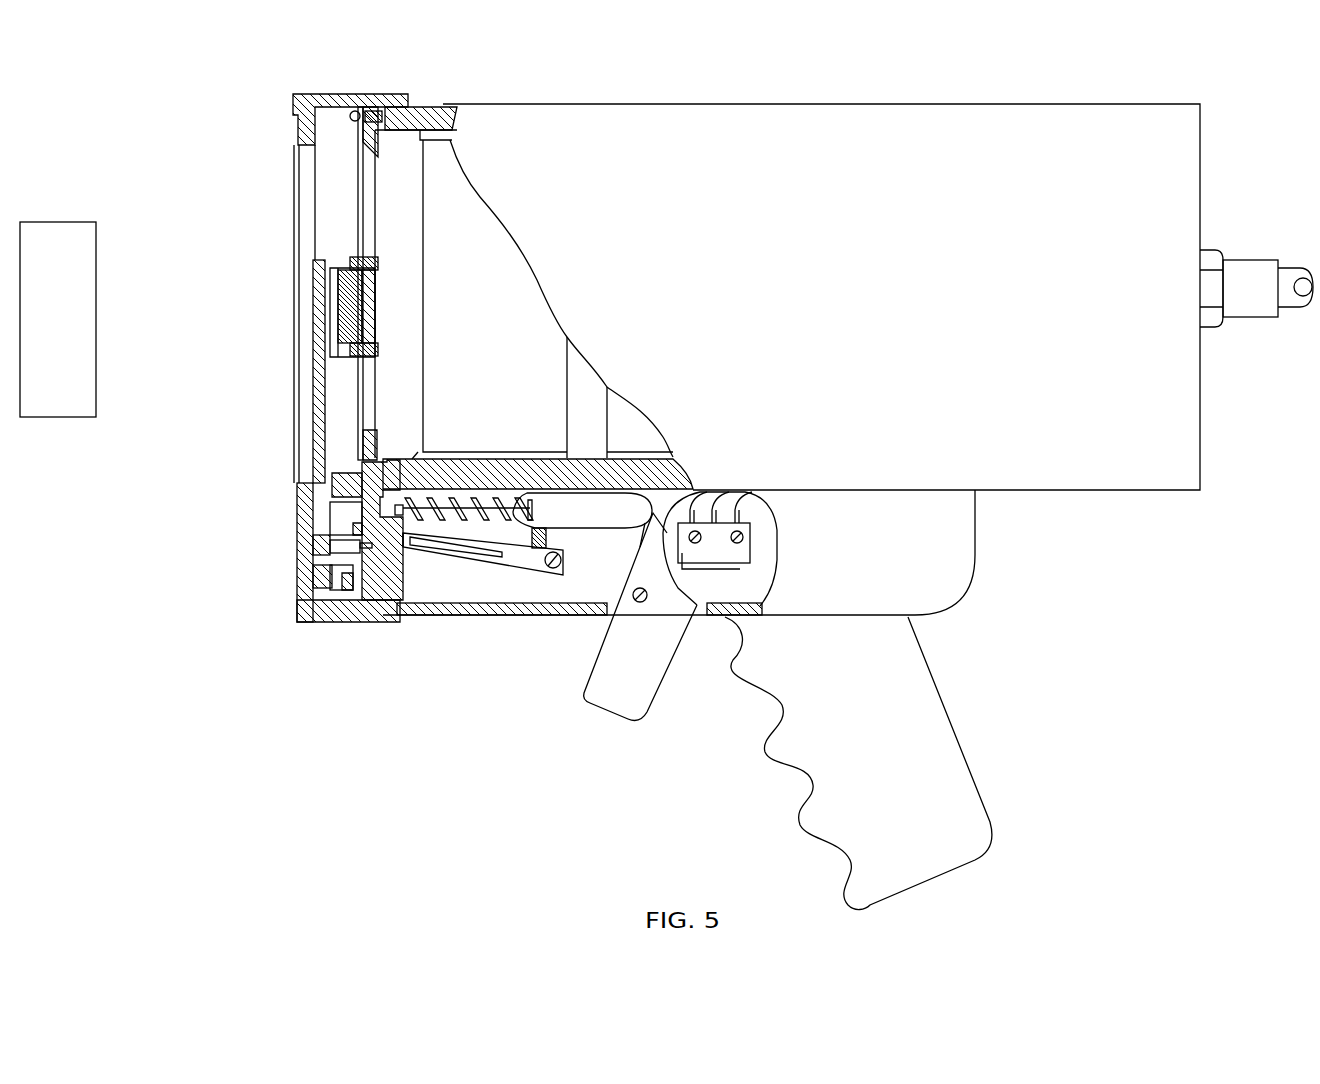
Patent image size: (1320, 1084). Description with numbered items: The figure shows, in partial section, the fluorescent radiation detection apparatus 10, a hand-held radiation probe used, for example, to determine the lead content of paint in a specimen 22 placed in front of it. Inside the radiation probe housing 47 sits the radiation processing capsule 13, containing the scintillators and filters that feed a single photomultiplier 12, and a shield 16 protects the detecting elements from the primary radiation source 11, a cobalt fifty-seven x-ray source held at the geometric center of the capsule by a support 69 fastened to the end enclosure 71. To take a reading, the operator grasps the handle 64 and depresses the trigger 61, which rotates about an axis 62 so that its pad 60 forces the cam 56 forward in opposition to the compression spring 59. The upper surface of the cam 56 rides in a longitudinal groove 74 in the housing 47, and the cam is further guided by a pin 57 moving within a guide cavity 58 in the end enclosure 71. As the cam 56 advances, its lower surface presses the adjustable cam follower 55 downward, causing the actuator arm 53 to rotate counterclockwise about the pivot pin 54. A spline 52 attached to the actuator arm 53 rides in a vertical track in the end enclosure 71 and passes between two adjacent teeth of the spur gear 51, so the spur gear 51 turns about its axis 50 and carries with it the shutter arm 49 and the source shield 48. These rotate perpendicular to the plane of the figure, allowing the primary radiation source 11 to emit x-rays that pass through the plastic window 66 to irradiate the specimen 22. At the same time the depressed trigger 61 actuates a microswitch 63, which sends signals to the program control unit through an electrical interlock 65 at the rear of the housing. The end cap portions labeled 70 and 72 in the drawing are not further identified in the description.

The fluorescent radiation detection apparatus 10 is at (1108, 492).
The primary radiation source 11 is at (330, 336).
The photomultiplier 12 is at (548, 298).
The radiation processing capsule 13 is at (410, 295).
The shield 16 is at (336, 252).
The specimen 22 is at (57, 418).
The radiation probe housing 47 is at (444, 104).
The source shield 48 is at (312, 300).
The shutter arm 49 is at (312, 388).
The axis 50 is at (322, 544).
The spur gear 51 is at (344, 590).
The spline 52 is at (403, 560).
The actuator arm 53 is at (457, 554).
The pivot pin 54 is at (556, 570).
The adjustable cam follower 55 is at (546, 535).
The cam 56 is at (582, 510).
The pin 57 is at (422, 505).
The guide cavity 58 is at (360, 521).
The compression spring 59 is at (473, 505).
The pad 60 is at (642, 543).
The trigger 61 is at (645, 720).
The axis 62 is at (648, 603).
The microswitch 63 is at (752, 552).
The handle 64 is at (990, 834).
The electrical interlock 65 is at (1258, 258).
The plastic window 66 is at (295, 432).
The support 69 is at (357, 178).
The end cap 70 is at (336, 94).
The end enclosure 71 is at (398, 95).
The cylinder wall 72 is at (587, 397).
The longitudinal groove 74 is at (740, 492).